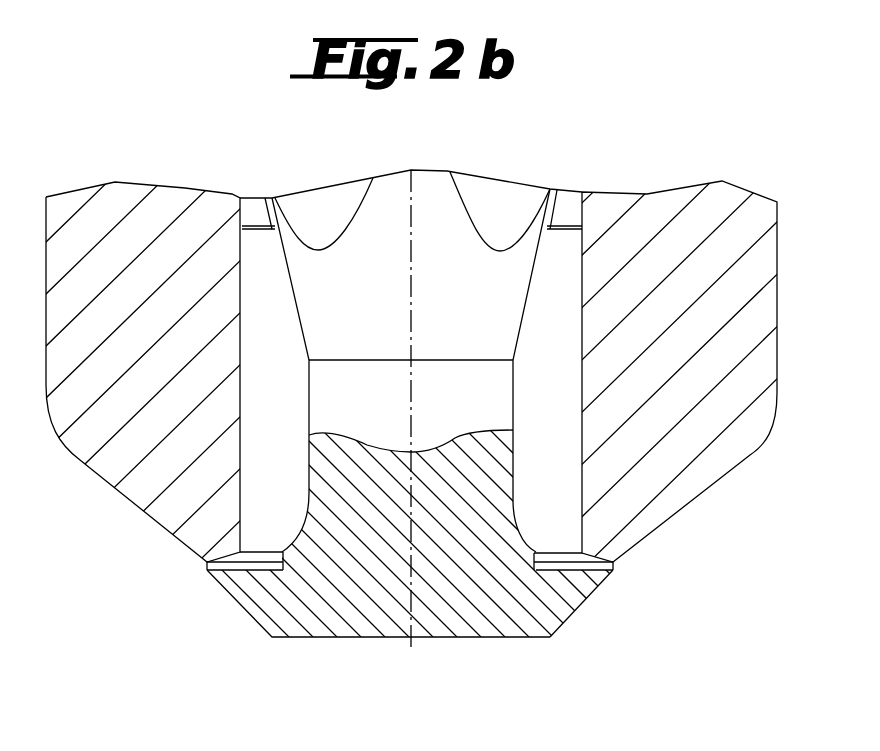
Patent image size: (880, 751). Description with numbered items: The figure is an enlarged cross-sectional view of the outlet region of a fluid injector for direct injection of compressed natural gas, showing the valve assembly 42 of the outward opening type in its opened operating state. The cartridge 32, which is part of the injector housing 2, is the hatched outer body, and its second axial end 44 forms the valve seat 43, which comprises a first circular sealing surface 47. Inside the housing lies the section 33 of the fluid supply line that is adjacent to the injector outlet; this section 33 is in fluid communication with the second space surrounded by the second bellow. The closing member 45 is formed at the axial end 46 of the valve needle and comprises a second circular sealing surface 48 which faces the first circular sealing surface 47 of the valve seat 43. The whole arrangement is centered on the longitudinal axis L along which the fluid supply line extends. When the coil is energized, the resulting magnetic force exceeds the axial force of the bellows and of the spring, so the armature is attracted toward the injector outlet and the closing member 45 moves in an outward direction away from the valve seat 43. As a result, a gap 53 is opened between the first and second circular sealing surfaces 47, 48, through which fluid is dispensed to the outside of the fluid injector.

The injector housing 2 is at (529, 375).
The cartridge 32 is at (705, 430).
The section of the fluid supply line 33 is at (568, 215).
The valve assembly 42 is at (623, 582).
The valve seat 43 is at (592, 552).
The second axial end of the cartridge 44 is at (192, 498).
The closing member 45 is at (567, 596).
The axial end of the valve needle 46 is at (308, 603).
The first circular sealing surface 47 is at (218, 565).
The second circular sealing surface 48 is at (597, 549).
The gap 53 is at (253, 563).
The longitudinal axis L is at (411, 650).